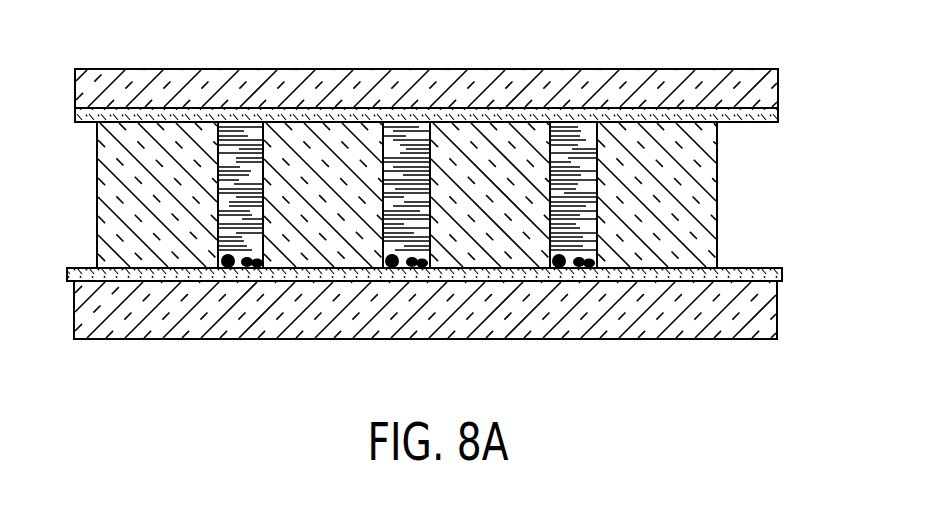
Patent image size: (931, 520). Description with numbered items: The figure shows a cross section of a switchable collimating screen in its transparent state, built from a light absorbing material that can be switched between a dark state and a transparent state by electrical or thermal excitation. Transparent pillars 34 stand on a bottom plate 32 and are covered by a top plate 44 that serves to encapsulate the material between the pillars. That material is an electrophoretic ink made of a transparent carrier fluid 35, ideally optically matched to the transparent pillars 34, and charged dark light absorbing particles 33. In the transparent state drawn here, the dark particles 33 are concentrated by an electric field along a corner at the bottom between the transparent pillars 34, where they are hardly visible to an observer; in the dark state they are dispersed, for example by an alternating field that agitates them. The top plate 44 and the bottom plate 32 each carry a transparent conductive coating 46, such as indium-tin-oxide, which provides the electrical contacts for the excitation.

The bottom plate 32 is at (757, 307).
The dark light absorbing particles 33 is at (227, 266).
The transparent pillars 34 is at (113, 242).
The transparent carrier fluid 35 is at (235, 150).
The top plate 44 is at (767, 85).
The transparent conductive coating 46 is at (736, 119).